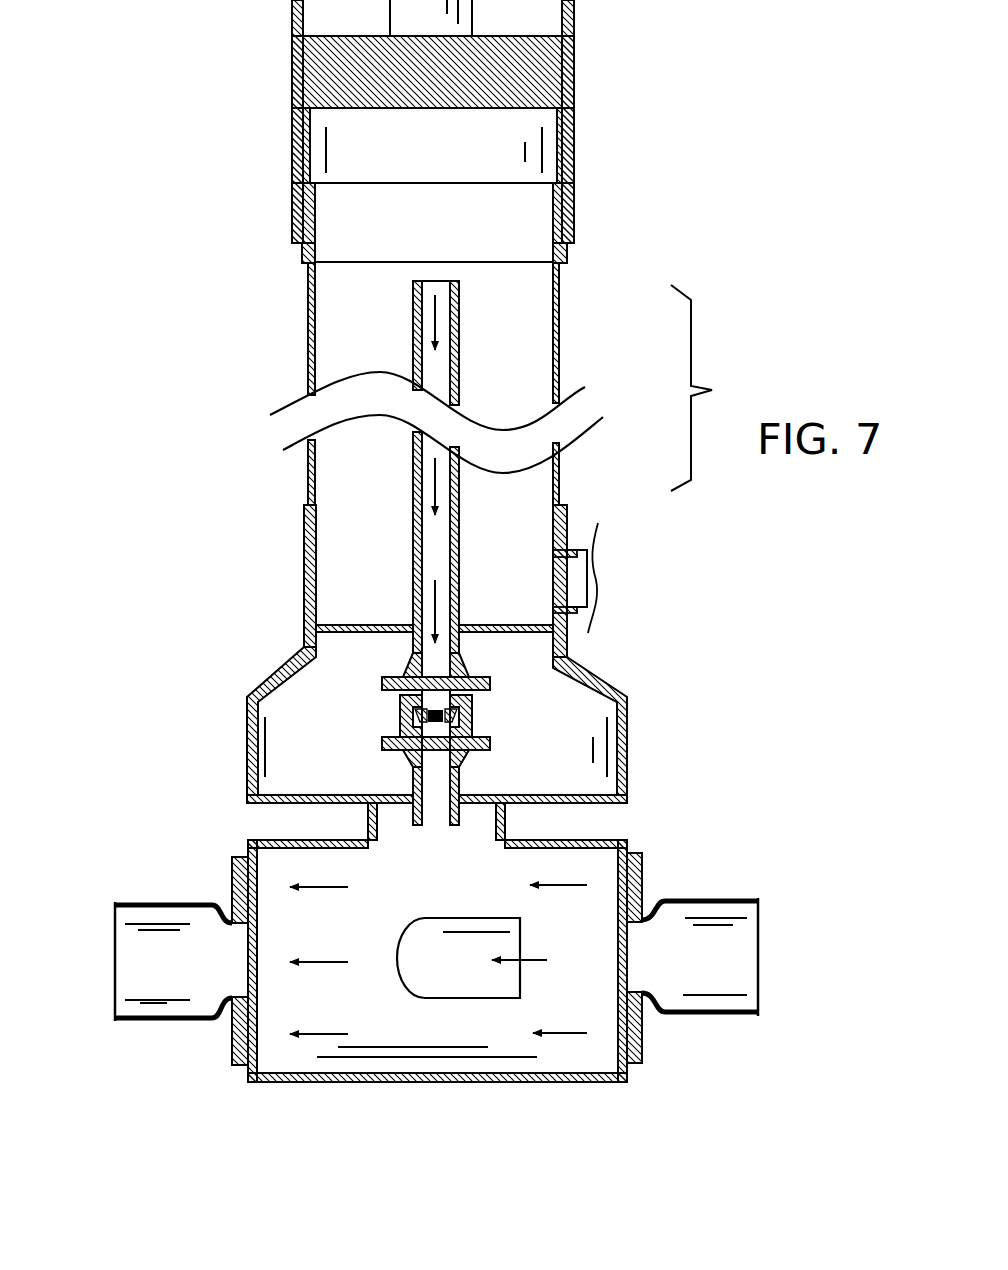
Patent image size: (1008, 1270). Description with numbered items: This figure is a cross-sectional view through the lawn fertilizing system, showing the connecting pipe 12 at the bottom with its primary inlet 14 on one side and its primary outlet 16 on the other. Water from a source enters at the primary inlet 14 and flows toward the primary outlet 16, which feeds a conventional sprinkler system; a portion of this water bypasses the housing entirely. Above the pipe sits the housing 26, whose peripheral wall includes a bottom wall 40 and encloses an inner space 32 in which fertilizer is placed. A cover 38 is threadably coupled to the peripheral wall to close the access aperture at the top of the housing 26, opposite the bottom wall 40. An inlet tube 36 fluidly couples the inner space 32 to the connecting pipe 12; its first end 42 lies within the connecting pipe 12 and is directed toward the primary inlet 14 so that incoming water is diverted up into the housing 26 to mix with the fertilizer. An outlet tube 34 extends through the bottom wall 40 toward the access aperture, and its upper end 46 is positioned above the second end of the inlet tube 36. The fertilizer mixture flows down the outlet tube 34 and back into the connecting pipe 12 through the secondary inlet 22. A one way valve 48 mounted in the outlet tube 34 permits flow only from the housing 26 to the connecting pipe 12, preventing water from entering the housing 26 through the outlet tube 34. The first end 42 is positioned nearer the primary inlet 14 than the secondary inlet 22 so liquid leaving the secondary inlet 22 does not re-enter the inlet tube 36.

The connecting pipe 12 is at (627, 1080).
The primary inlet 14 is at (758, 1010).
The primary outlet 16 is at (115, 1018).
The secondary inlet 22 is at (460, 808).
The housing 26 is at (247, 802).
The inner space 32 is at (350, 479).
The outlet tube 34 is at (477, 693).
The inlet tube 36 is at (420, 975).
The cover 38 is at (575, 67).
The bottom wall 40 is at (300, 802).
The first end 42 is at (522, 980).
The upper end 46 is at (457, 282).
The one way valve 48 is at (488, 745).